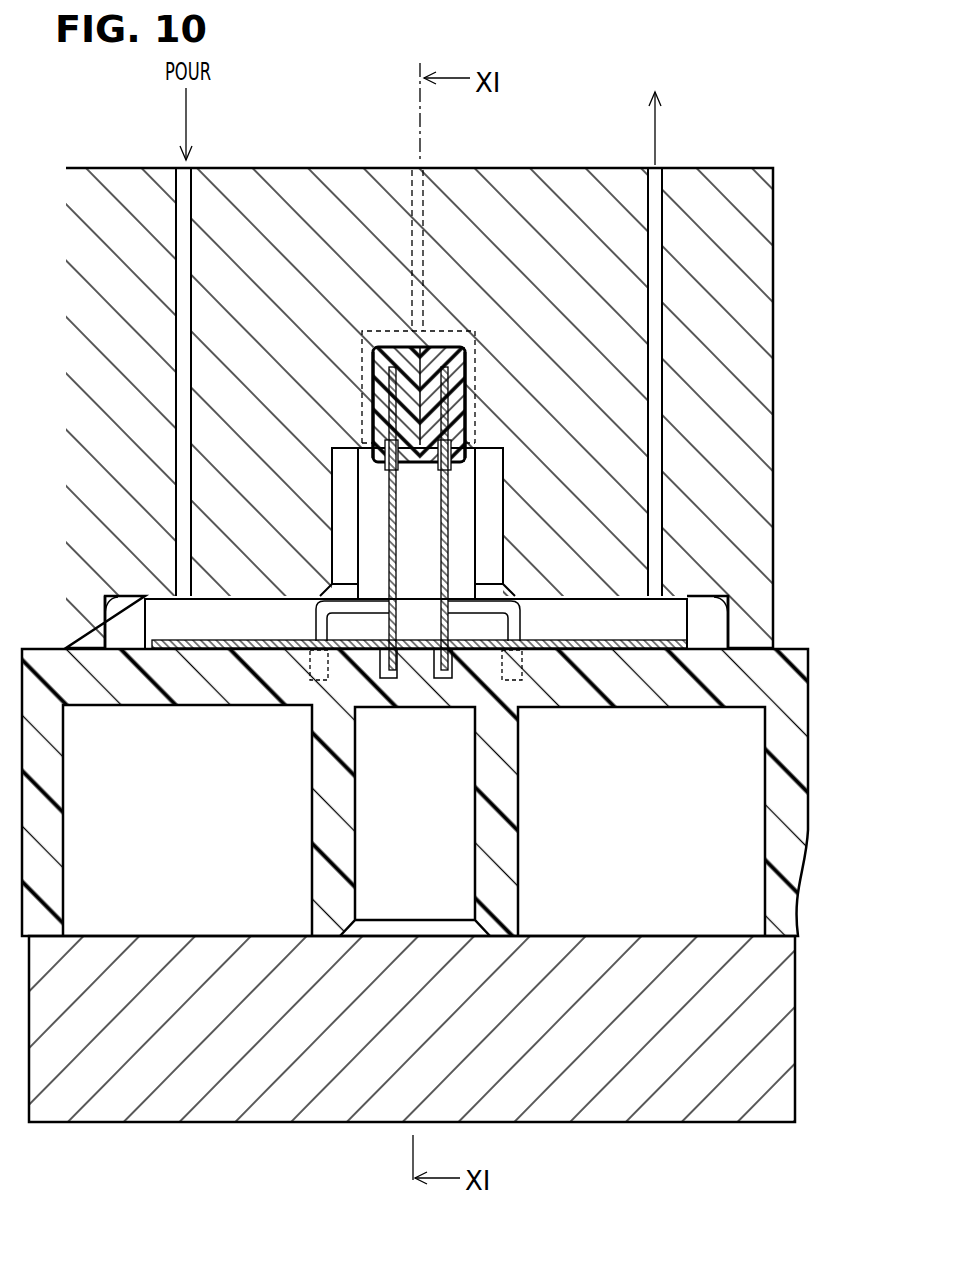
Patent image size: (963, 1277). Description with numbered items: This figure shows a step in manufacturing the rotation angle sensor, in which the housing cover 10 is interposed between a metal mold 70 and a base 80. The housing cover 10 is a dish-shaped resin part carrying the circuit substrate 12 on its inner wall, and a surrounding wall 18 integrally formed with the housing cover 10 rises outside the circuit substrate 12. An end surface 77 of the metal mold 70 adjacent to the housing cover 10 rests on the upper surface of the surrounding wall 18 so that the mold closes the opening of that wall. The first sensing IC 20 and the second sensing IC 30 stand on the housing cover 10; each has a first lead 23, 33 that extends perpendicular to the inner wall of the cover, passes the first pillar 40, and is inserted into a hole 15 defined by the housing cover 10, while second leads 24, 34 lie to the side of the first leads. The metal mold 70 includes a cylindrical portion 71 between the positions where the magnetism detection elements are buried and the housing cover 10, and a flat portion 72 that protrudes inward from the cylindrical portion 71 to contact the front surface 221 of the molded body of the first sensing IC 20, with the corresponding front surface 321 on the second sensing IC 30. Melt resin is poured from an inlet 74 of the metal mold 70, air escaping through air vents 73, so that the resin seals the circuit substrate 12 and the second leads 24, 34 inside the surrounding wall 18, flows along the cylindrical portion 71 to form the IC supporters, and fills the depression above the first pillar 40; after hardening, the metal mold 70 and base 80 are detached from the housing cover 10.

The housing cover 10 is at (787, 740).
The circuit substrate 12 is at (218, 640).
The hole 15 is at (318, 681).
The surrounding wall 18 is at (118, 630).
The first sensing IC 20 is at (398, 346).
The front surface 221 is at (373, 418).
The first lead 23 is at (400, 651).
The second lead 24 is at (322, 640).
The second sensing IC 30 is at (452, 346).
The front surface 321 is at (466, 418).
The first lead 33 is at (427, 651).
The second lead 34 is at (522, 614).
The first pillar 40 is at (476, 563).
The metal mold 70 is at (288, 245).
The cylindrical portion 71 is at (497, 506).
The flat portion 72 is at (376, 352).
The air vent 73 is at (659, 208).
The inlet 74 is at (184, 175).
The end surface 77 is at (112, 600).
The base 80 is at (198, 1093).